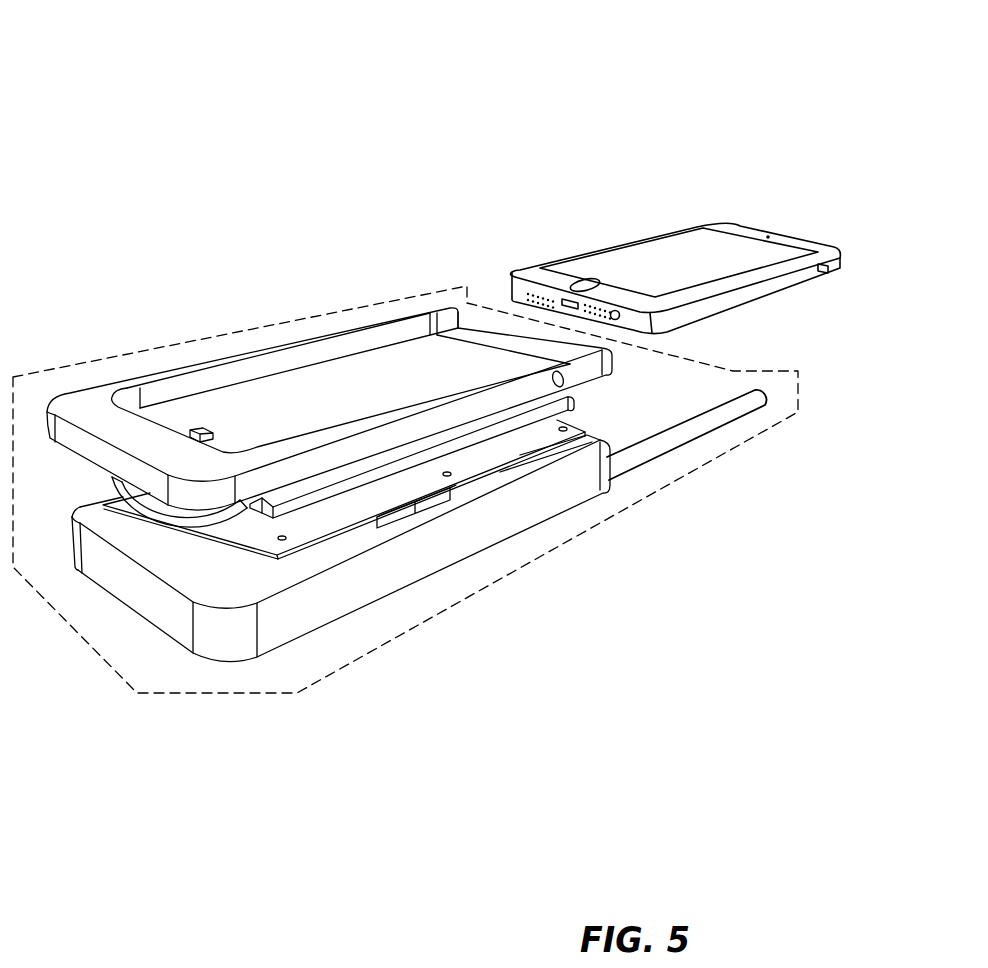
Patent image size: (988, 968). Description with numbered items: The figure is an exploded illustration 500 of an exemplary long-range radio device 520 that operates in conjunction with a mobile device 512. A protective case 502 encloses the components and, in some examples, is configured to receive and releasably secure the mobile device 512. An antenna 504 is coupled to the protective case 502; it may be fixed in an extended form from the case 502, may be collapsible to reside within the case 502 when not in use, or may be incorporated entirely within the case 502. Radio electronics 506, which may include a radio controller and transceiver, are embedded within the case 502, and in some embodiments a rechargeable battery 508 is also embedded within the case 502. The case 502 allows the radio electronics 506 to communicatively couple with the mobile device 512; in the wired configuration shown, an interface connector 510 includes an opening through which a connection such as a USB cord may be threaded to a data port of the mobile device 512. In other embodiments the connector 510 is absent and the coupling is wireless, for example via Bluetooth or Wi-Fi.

The exploded illustration 500 is at (114, 42).
The protective case 502 is at (340, 597).
The antenna 504 is at (633, 457).
The radio electronics 506 is at (305, 545).
The rechargeable battery 508 is at (448, 448).
The interface connector 510 is at (200, 433).
The mobile device 512 is at (663, 255).
The long-range radio device 520 is at (457, 285).